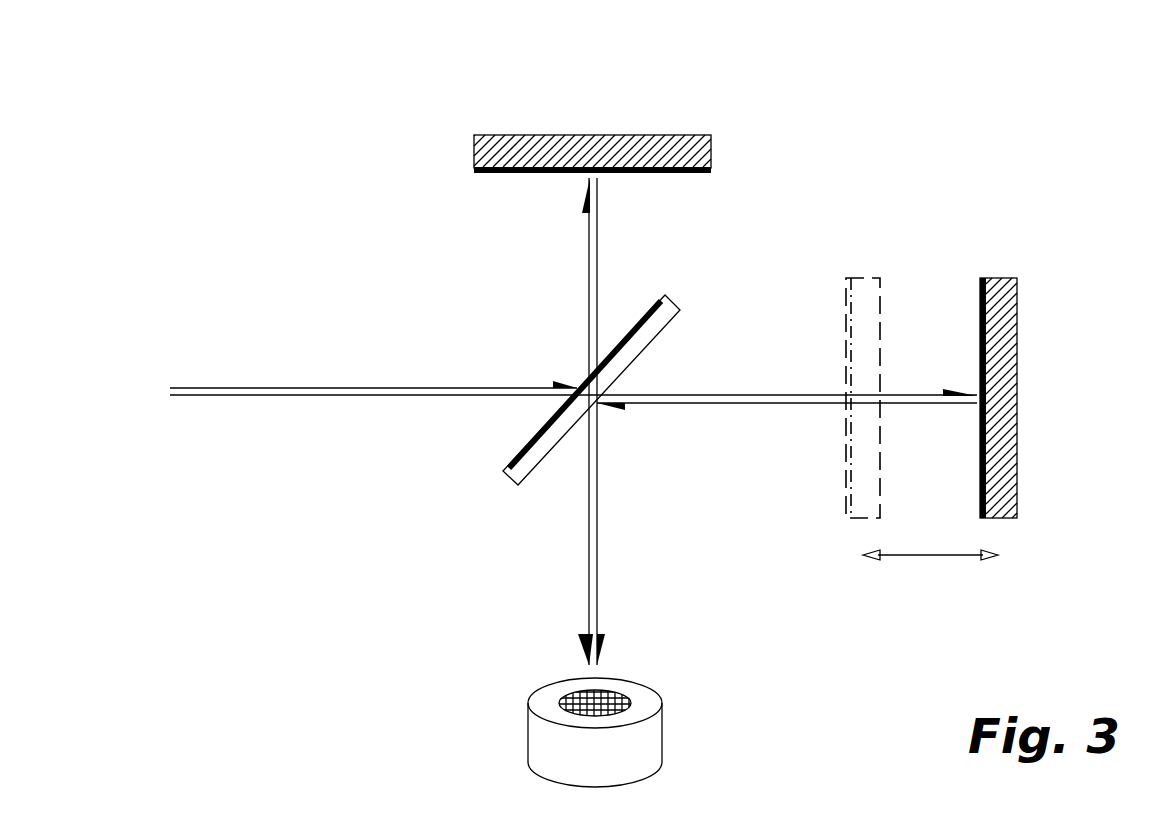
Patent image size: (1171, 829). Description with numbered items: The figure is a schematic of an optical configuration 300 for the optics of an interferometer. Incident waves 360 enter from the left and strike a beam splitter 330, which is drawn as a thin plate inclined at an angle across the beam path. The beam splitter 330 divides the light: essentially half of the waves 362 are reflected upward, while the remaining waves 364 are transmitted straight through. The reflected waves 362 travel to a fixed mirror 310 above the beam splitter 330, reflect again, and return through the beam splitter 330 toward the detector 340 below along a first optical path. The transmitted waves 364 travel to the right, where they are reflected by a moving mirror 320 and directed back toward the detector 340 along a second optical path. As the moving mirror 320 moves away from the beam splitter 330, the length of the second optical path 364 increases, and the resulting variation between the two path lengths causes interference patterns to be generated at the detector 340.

The optical configuration 300 is at (423, 70).
The fixed mirror 310 is at (712, 158).
The moving mirror 320 is at (1018, 332).
The beam splitter 330 is at (515, 486).
The detector 340 is at (662, 728).
The incident waves 360 is at (240, 394).
The reflected waves 362 is at (586, 268).
The transmitted waves 364 is at (765, 396).